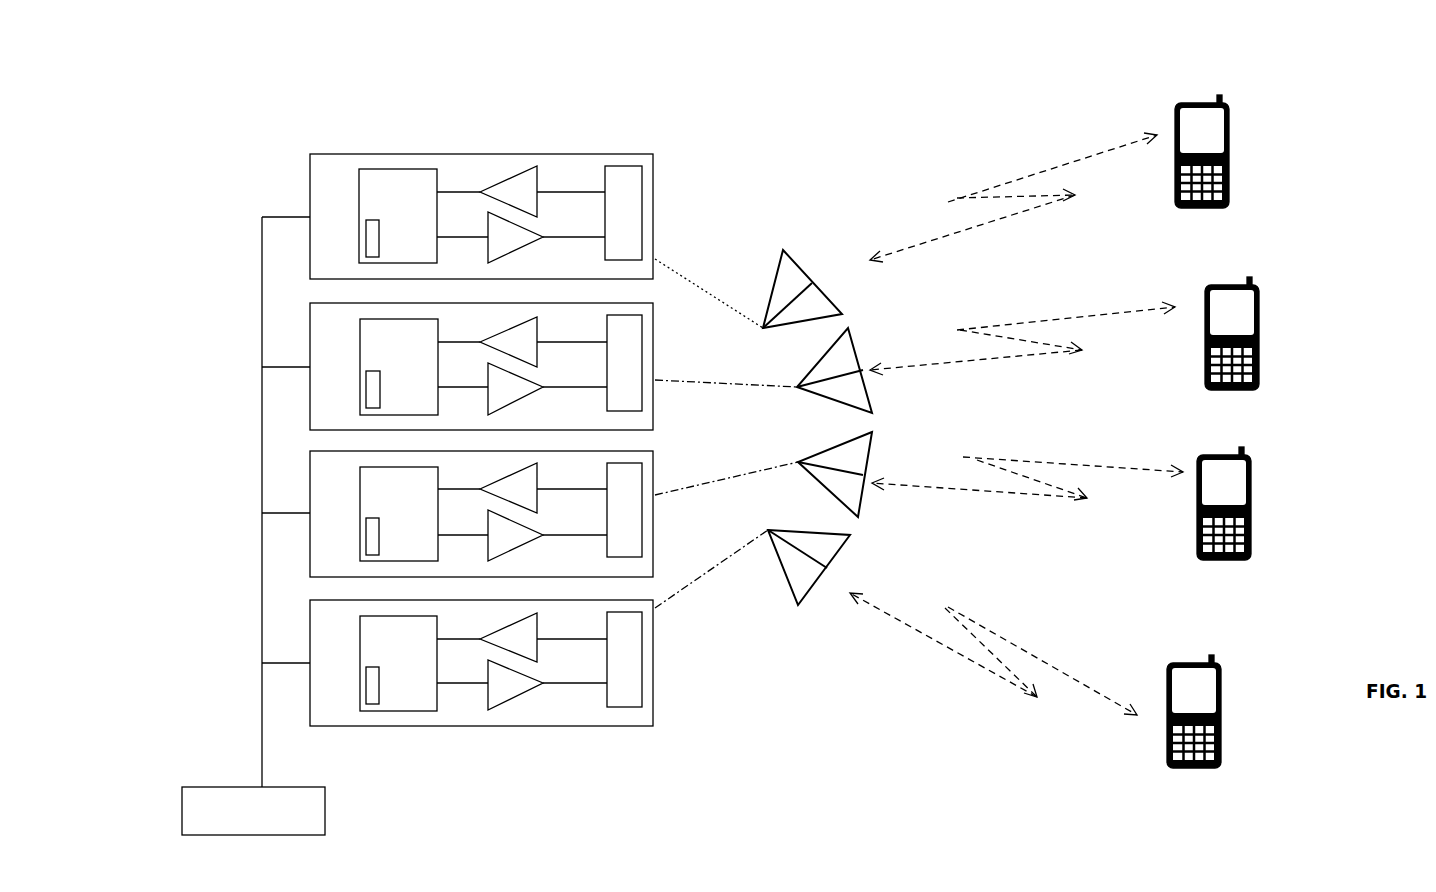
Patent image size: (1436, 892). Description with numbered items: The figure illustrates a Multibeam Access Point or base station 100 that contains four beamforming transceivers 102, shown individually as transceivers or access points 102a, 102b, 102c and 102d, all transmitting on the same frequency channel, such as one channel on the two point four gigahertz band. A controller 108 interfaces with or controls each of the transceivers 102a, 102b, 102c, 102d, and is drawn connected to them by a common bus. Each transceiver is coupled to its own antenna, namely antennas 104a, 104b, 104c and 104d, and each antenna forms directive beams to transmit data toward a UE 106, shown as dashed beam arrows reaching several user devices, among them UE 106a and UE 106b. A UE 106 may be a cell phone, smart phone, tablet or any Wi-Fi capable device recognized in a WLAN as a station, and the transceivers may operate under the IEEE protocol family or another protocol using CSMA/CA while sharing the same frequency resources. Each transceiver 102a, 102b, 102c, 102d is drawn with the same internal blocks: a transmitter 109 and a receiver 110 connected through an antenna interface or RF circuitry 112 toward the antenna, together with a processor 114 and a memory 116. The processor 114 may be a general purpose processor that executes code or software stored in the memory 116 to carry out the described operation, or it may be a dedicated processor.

The Multibeam Access Point or base station 100 is at (205, 115).
The beamforming transceivers 102 is at (653, 545).
The beamforming transceiver 102a is at (310, 260).
The beamforming transceiver 102b is at (310, 407).
The beamforming transceiver 102c is at (310, 492).
The beamforming transceiver 102d is at (310, 707).
The antenna 104a is at (777, 273).
The antenna 104b is at (858, 358).
The antenna 104c is at (863, 475).
The antenna 104d is at (808, 579).
The UE 106 is at (1200, 385).
The UE 106a is at (1230, 162).
The UE 106b is at (1258, 340).
The controller 108 is at (202, 785).
The transmitter 109 is at (483, 227).
The receiver 110 is at (520, 168).
The antenna interface or RF circuitry 112 is at (620, 167).
The processor 114 is at (388, 170).
The memory 116 is at (362, 225).